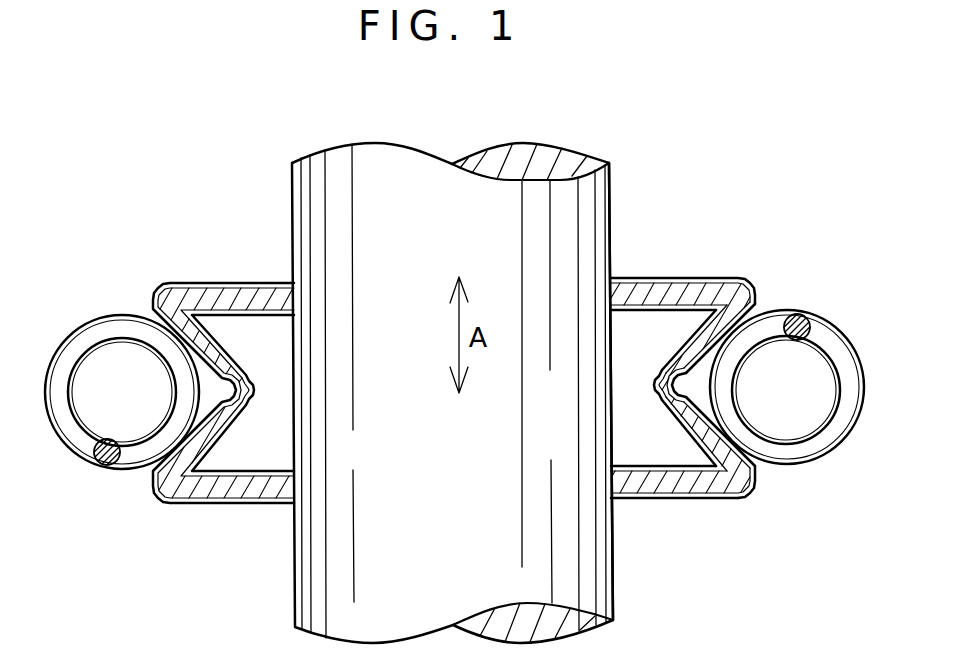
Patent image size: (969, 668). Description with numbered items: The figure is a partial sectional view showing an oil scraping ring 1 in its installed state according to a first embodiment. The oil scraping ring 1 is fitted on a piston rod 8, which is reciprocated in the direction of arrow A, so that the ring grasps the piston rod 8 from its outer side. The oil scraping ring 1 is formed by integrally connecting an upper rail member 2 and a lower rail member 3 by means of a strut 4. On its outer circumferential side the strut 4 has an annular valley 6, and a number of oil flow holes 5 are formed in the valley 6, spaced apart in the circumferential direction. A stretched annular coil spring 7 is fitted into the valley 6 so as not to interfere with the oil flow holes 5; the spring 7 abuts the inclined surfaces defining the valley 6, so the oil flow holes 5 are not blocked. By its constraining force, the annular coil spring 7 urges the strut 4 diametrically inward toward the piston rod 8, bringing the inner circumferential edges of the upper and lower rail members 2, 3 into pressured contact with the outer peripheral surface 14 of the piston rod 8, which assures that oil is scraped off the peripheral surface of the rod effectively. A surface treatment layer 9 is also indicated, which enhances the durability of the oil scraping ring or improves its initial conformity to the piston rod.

The oil scraping ring 1 is at (729, 246).
The upper rail member 2 is at (635, 295).
The lower rail member 3 is at (632, 490).
The strut 4 is at (770, 462).
The oil flow holes 5 is at (650, 387).
The annular valley 6 is at (702, 363).
The annular coil spring 7 is at (827, 340).
The piston rod 8 is at (403, 187).
The surface treatment layer 9 is at (698, 503).
The outer peripheral surface 14 is at (617, 558).